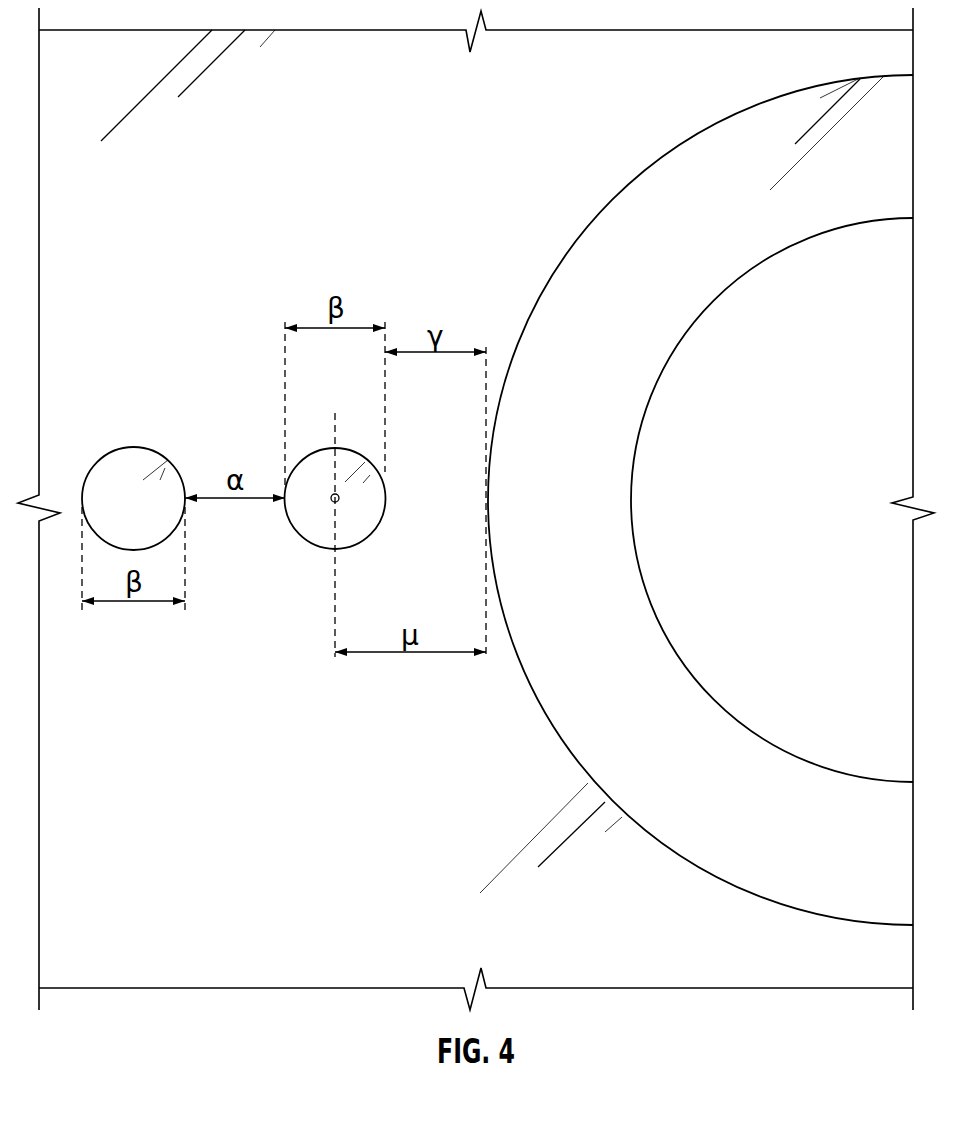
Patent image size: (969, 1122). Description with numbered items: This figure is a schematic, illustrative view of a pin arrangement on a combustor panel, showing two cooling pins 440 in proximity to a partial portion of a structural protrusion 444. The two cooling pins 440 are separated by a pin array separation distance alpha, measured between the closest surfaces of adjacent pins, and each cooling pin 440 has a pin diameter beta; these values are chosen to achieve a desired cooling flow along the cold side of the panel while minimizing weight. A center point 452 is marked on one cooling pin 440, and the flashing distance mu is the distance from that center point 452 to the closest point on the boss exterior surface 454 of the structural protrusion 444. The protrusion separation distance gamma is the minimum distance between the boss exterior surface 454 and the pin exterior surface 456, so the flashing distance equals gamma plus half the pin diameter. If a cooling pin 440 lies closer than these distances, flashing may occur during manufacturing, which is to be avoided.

The cooling pin 440 is at (268, 498).
The structural protrusion 444 is at (694, 500).
The center point 452 is at (337, 502).
The boss exterior surface 454 is at (561, 254).
The pin exterior surface 456 is at (386, 498).